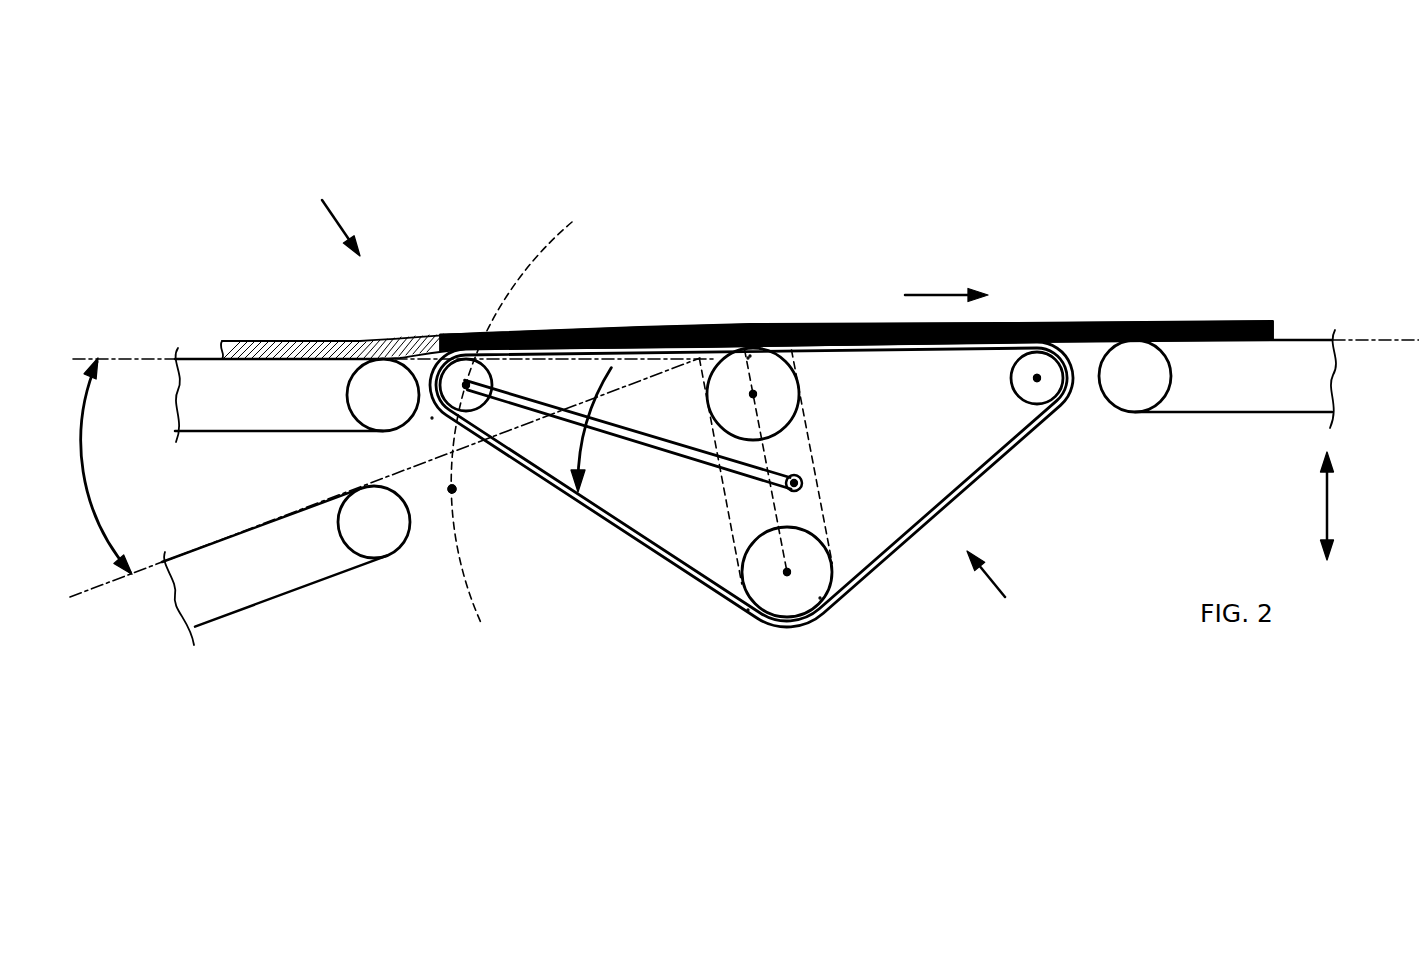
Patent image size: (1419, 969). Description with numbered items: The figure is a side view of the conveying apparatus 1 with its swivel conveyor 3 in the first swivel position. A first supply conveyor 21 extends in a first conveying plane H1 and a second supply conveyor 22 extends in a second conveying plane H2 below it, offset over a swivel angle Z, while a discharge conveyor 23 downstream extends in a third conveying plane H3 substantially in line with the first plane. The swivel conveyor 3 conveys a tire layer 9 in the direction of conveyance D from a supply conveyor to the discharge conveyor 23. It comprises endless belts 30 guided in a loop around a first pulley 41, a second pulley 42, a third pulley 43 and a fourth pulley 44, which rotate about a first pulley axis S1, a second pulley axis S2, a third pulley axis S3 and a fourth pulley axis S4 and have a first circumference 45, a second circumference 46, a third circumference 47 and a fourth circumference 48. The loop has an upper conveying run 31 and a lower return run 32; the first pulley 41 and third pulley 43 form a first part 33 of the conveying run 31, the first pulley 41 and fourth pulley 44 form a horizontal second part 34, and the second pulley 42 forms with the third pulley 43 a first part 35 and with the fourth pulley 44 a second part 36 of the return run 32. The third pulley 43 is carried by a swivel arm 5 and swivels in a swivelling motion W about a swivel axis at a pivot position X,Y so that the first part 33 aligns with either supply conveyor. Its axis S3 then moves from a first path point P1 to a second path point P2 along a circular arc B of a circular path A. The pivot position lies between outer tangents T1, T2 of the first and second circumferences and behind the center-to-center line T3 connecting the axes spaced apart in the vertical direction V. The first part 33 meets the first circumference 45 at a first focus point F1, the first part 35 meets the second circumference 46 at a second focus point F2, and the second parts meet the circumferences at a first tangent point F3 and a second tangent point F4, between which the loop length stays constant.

The conveying apparatus 1 is at (332, 216).
The swivel conveyor 3 is at (1000, 588).
The swivel arm 5 is at (657, 449).
The tire layer 9 is at (232, 345).
The first supply conveyor 21 is at (231, 413).
The second supply conveyor 22 is at (283, 592).
The discharge conveyor 23 is at (1226, 395).
The endless belts 30 is at (866, 578).
The conveying run 31 is at (878, 355).
The return run 32 is at (687, 576).
The first part of the conveying run 33 is at (725, 354).
The second part of the conveying run 34 is at (922, 356).
The first part of the return run 35 is at (598, 516).
The second part of the return run 36 is at (962, 492).
The first pulley 41 is at (776, 360).
The second pulley 42 is at (808, 600).
The third pulley 43 is at (458, 332).
The fourth pulley 44 is at (1062, 400).
The first circumference 45 is at (804, 366).
The second circumference 46 is at (757, 540).
The third circumference 47 is at (513, 332).
The fourth circumference 48 is at (1023, 342).
The first pulley axis S1 is at (758, 394).
The second pulley axis S2 is at (792, 572).
The third pulley axis S3 is at (471, 385).
The fourth pulley axis S4 is at (1032, 378).
The swivel axis at pivot position X,Y is at (804, 482).
The outer tangent T1 is at (724, 492).
The outer tangent T2 is at (812, 455).
The center-to-center line T3 is at (764, 445).
The circular path A is at (511, 419).
The circular arc B is at (457, 489).
The first path point P1 is at (432, 418).
The second path point P2 is at (452, 494).
The first conveying plane H1 is at (389, 339).
The second conveying plane H2 is at (377, 477).
The third conveying plane H3 is at (1376, 325).
The swivel angle Z is at (96, 466).
The swivelling motion W is at (593, 432).
The vertical direction V is at (1339, 506).
The direction of conveyance D is at (946, 280).
The first focus point F1 is at (750, 356).
The second focus point F2 is at (748, 610).
The first tangent point F3 is at (748, 358).
The second tangent point F4 is at (820, 598).